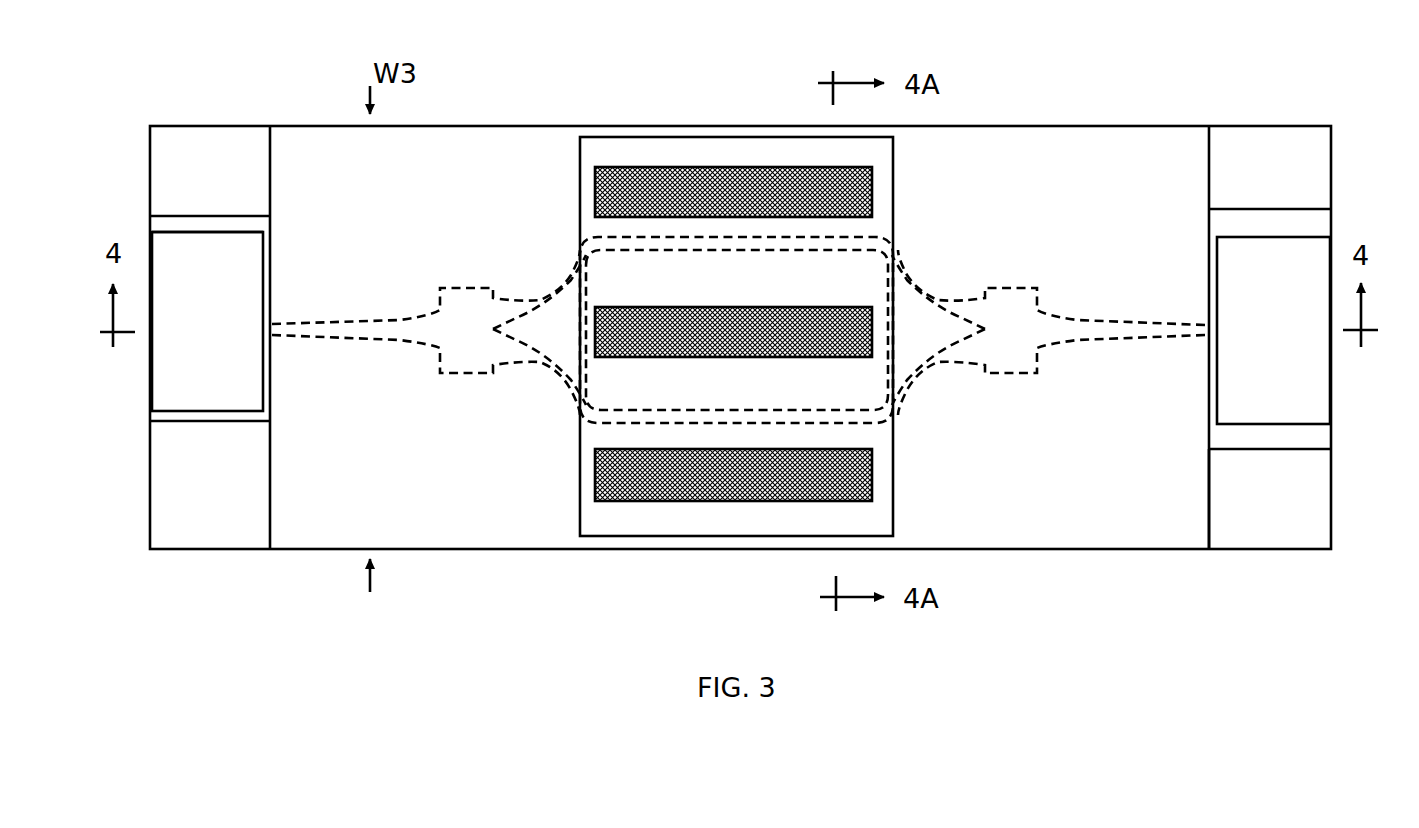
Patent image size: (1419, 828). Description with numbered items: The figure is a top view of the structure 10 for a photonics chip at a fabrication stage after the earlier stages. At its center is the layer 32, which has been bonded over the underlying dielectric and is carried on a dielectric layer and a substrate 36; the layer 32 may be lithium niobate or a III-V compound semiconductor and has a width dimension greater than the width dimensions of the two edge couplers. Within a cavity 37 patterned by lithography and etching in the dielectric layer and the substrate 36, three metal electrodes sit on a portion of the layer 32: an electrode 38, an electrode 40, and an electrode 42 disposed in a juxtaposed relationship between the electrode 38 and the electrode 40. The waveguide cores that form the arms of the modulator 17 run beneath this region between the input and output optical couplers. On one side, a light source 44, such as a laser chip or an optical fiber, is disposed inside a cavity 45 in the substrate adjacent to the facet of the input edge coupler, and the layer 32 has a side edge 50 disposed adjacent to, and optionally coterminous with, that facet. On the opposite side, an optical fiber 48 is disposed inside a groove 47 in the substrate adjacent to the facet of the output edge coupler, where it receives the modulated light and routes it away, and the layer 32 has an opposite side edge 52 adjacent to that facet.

The structure 10 is at (152, 82).
The modulator 17 is at (968, 187).
The layer 32 is at (880, 459).
The substrate 36 is at (320, 178).
The cavity 37 is at (729, 291).
The electrode 38 is at (630, 192).
The electrode 40 is at (623, 479).
The electrode 42 is at (634, 328).
The light source 44 is at (182, 387).
The cavity 45 is at (237, 232).
The groove 47 is at (1237, 432).
The optical fiber 48 is at (1293, 388).
The side edge 50 is at (268, 465).
The side edge 52 is at (1210, 508).